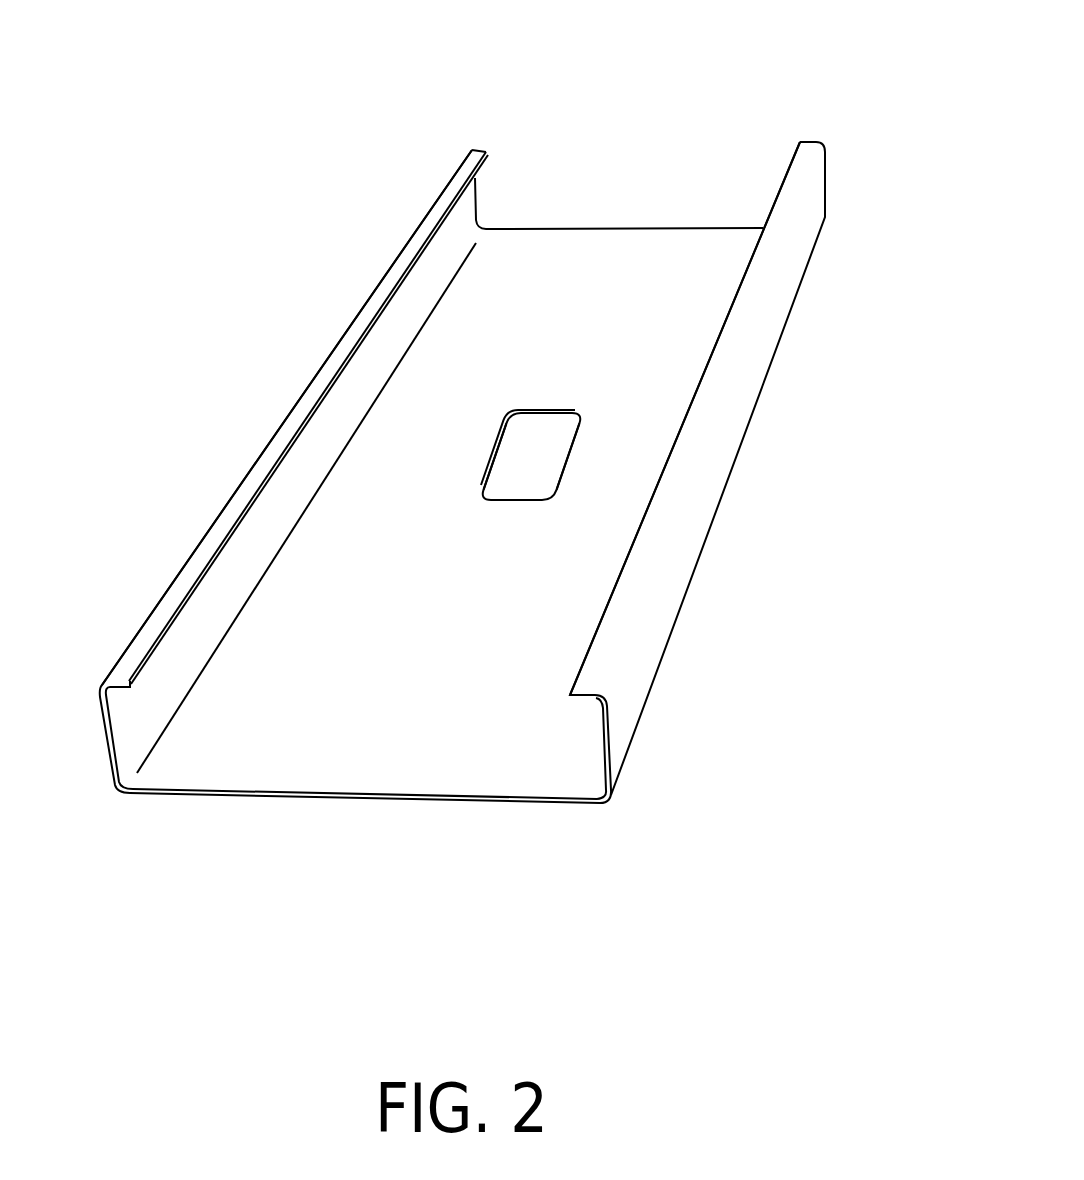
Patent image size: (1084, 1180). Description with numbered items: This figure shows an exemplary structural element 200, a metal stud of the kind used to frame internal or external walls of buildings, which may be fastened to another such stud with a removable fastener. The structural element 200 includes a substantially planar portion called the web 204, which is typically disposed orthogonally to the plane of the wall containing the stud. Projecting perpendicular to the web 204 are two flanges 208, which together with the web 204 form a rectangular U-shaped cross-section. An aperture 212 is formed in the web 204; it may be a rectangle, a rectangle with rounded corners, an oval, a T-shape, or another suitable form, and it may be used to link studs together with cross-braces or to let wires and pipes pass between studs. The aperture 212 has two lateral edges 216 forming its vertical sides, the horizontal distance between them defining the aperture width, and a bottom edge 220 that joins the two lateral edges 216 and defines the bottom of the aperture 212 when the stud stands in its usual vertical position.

The structural element 200 is at (262, 103).
The web 204 is at (582, 278).
The flanges 208 is at (343, 387).
The aperture 212 is at (522, 455).
The lateral edges 216 is at (487, 463).
The bottom edge 220 is at (507, 502).